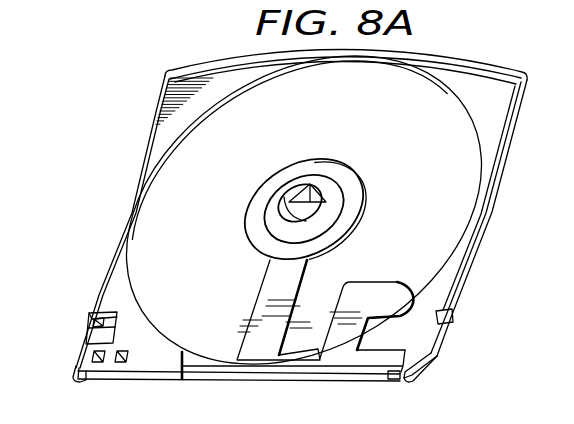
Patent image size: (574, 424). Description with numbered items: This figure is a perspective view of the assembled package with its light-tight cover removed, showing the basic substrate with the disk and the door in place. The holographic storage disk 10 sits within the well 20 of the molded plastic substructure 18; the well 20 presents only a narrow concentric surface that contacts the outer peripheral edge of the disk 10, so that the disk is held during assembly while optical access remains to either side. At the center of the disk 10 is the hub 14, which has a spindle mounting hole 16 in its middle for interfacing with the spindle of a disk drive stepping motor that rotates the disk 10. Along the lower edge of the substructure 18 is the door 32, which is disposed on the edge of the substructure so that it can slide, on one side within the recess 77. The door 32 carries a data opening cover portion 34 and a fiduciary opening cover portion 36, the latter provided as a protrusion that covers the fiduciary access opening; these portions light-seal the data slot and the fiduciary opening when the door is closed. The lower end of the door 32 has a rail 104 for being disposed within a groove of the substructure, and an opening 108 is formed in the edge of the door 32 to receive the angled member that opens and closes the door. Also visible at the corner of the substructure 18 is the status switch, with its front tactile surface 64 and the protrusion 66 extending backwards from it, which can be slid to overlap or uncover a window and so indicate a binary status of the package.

The disk 10 is at (458, 118).
The hub 14 is at (256, 205).
The spindle mounting hole 16 is at (288, 195).
The substructure 18 is at (507, 83).
The well 20 is at (222, 97).
The door 32 is at (355, 365).
The data opening cover portion 34 is at (265, 304).
The fiduciary opening cover portion 36 is at (378, 284).
The front tactile surface 64 is at (82, 338).
The protrusion 66 is at (90, 331).
The recess 77 is at (210, 365).
The rail 104 is at (445, 345).
The opening 108 is at (391, 376).